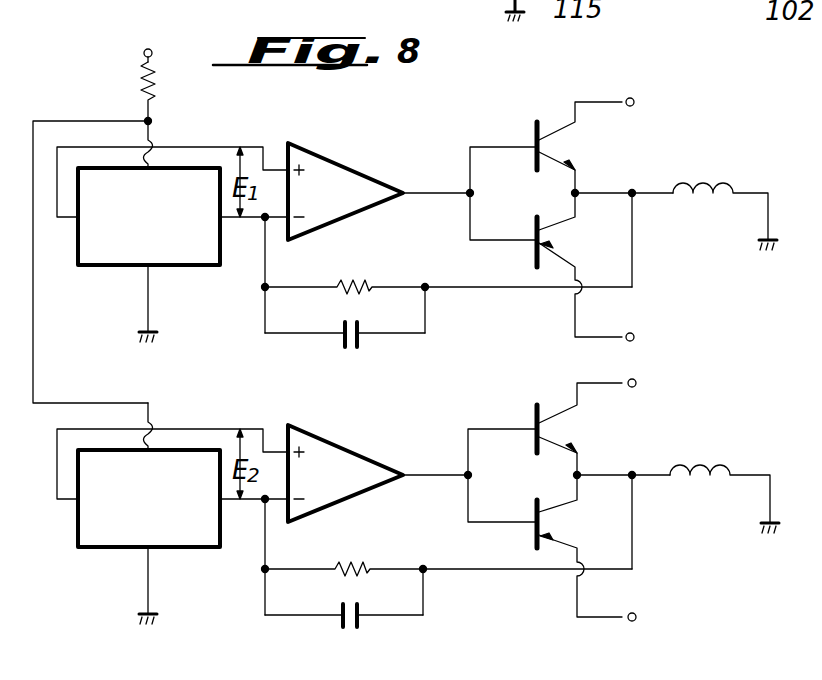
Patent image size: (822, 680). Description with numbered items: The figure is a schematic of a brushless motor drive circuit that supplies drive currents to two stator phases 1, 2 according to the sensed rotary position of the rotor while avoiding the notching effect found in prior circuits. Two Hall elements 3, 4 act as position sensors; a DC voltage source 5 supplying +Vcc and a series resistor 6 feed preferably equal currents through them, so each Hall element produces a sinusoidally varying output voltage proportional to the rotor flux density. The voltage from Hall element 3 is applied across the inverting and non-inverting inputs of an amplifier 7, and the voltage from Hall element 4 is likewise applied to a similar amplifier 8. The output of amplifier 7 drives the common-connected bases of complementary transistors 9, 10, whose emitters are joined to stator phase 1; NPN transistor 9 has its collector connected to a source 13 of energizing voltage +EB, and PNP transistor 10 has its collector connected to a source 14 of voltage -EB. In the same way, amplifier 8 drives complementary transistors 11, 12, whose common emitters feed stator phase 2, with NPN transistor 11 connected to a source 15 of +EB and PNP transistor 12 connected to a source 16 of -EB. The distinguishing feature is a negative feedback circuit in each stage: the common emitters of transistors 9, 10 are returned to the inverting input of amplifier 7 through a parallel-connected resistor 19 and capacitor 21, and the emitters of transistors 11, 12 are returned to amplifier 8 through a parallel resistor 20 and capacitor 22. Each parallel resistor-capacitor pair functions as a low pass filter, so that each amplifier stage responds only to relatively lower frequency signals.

The stator phase 1 is at (705, 200).
The stator phase 2 is at (705, 482).
The Hall element 3 is at (207, 266).
The Hall element 4 is at (207, 548).
The DC voltage source 5 is at (148, 49).
The resistor 6 is at (140, 85).
The amplifier 7 is at (360, 177).
The amplifier 8 is at (375, 462).
The NPN transistor 9 is at (553, 147).
The PNP transistor 10 is at (548, 240).
The NPN transistor 11 is at (553, 430).
The PNP transistor 12 is at (548, 522).
The source of energizing voltage +EB 13 is at (634, 104).
The source of energizing voltage -EB 14 is at (634, 339).
The source of energizing voltage +EB 15 is at (636, 385).
The source of energizing voltage -EB 16 is at (636, 619).
The feedback resistor 19 is at (364, 283).
The feedback resistor 20 is at (364, 565).
The feedback capacitor 21 is at (355, 348).
The feedback capacitor 22 is at (355, 630).